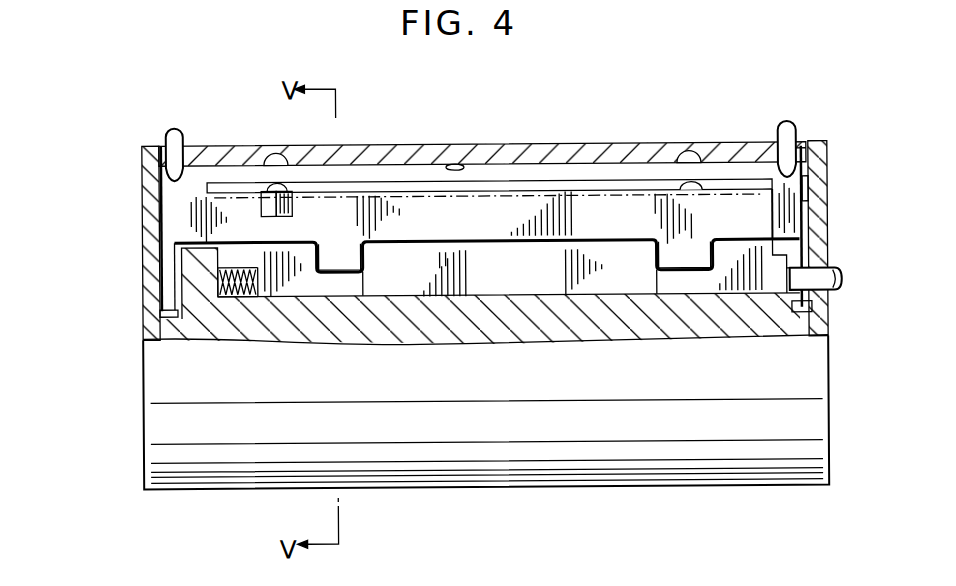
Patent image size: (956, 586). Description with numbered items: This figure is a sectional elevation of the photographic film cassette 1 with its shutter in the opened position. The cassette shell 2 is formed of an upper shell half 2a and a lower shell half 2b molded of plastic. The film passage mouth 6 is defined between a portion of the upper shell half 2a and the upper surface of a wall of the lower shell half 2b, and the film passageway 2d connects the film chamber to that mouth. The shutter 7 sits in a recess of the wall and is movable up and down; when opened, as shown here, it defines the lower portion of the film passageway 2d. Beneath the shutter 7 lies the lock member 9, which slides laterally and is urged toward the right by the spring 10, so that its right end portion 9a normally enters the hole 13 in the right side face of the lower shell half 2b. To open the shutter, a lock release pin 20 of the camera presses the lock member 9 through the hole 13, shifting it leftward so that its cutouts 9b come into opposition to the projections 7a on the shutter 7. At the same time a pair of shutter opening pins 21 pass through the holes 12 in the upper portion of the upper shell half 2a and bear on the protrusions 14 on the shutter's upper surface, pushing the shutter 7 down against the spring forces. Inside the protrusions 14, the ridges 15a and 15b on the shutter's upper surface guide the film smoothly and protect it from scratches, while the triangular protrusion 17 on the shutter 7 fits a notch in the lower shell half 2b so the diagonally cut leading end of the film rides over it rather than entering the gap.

The photographic film cassette 1 is at (128, 421).
The cassette shell 2 is at (60, 170).
The upper shell half 2a is at (129, 177).
The lower shell half 2b is at (130, 247).
The film passageway 2d is at (463, 164).
The film passage mouth 6 is at (567, 183).
The shutter 7 is at (437, 213).
The projections 7a is at (331, 257).
The lock member 9 is at (560, 277).
The right end portion 9a is at (777, 270).
The cutouts 9b is at (357, 273).
The spring 10 is at (237, 296).
The holes 12 is at (798, 143).
The hole 13 is at (818, 264).
The protrusions 14 is at (808, 204).
The ridge 15a is at (693, 192).
The ridge 15b is at (262, 205).
The triangular protrusion 17 is at (293, 204).
The lock release pin 20 is at (836, 293).
The shutter opening pins 21 is at (188, 130).